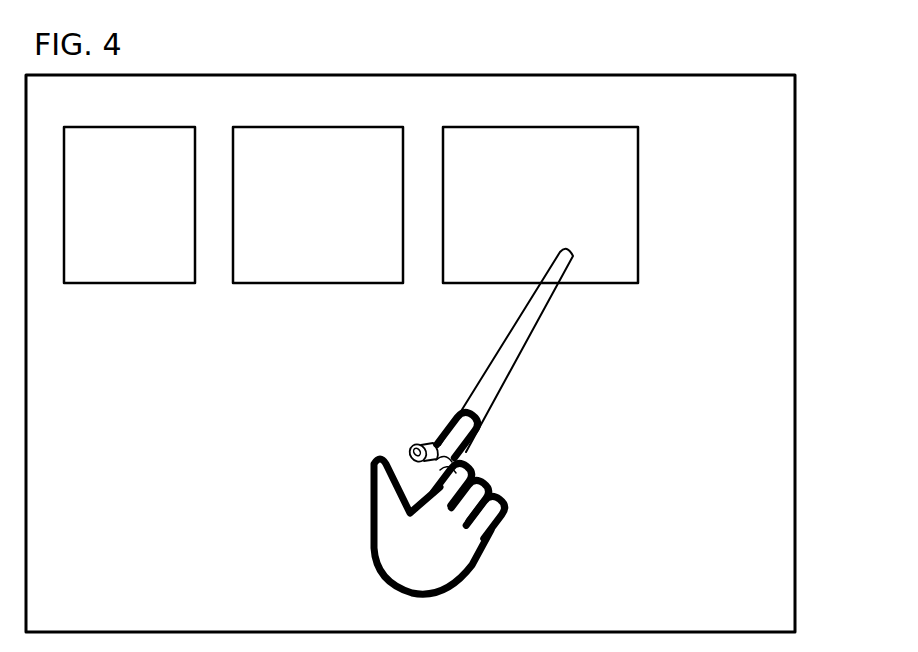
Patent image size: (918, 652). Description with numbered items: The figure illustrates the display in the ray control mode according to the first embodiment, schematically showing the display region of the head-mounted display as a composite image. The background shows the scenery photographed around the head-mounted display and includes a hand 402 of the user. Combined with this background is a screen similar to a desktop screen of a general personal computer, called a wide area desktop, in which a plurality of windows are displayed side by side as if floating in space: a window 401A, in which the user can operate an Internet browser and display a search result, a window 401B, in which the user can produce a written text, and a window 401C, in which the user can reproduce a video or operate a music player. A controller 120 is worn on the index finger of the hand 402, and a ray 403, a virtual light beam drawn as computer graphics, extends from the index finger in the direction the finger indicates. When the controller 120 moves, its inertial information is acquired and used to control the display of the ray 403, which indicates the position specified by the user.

The window 401A is at (92, 283).
The window 401B is at (275, 283).
The window 401C is at (462, 283).
The ray 403 is at (522, 337).
The controller 120 is at (413, 450).
The hand 402 is at (417, 567).